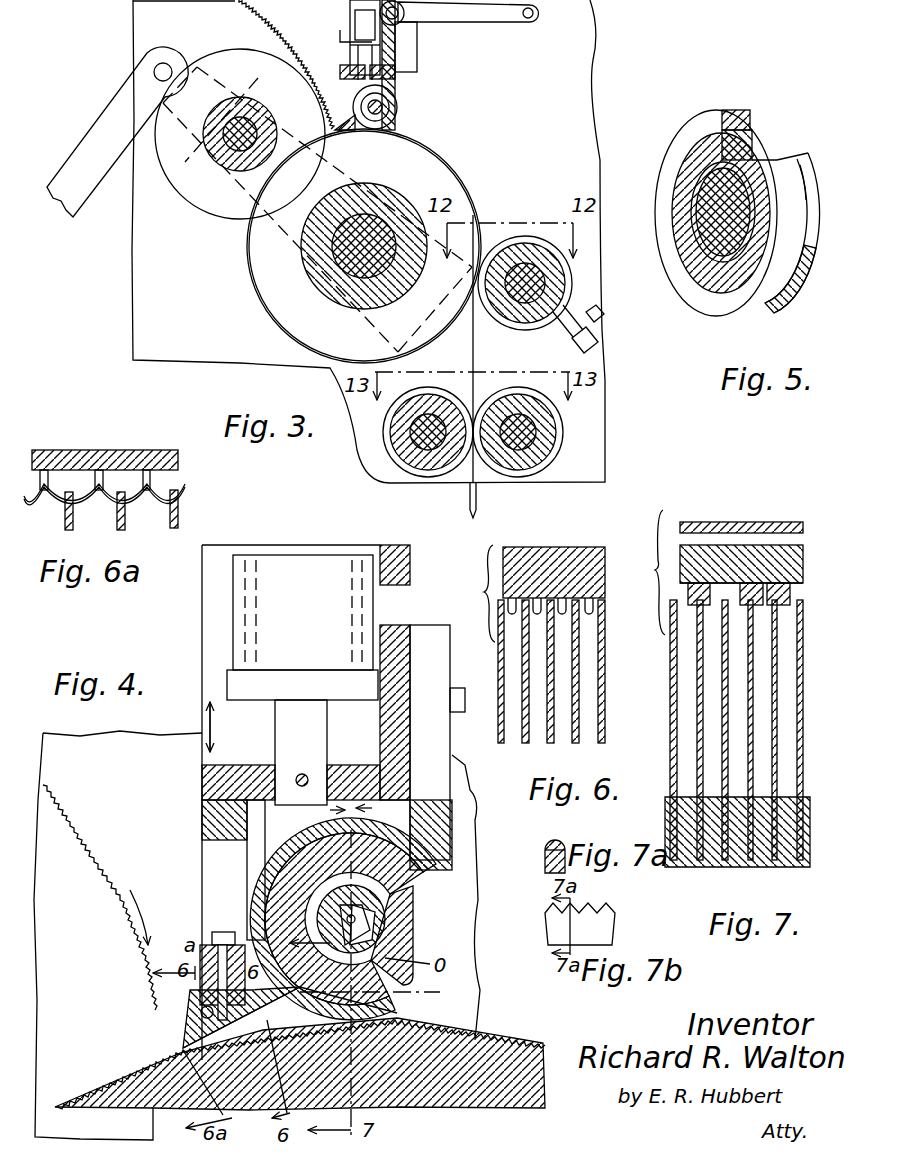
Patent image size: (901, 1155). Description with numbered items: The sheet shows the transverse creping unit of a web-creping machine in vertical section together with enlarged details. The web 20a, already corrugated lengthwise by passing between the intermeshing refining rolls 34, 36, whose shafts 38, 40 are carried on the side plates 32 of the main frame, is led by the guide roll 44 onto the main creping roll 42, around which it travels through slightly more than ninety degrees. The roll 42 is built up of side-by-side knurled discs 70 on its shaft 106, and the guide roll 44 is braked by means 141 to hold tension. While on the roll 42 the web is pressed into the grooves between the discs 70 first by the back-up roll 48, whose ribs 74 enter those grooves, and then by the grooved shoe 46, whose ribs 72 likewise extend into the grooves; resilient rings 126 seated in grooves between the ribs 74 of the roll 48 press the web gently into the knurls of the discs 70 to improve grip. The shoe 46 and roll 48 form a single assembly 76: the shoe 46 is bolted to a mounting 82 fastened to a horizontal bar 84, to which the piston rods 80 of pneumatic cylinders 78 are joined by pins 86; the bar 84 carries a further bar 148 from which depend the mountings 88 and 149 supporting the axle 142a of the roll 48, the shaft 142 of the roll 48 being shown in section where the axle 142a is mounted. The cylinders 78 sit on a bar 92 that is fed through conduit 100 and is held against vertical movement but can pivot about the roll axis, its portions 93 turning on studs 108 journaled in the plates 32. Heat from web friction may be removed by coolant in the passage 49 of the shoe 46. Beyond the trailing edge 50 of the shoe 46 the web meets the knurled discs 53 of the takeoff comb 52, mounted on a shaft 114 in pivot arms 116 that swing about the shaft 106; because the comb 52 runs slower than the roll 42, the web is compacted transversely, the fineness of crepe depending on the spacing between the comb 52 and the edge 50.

In FIG. 3, the web 20a is at (470, 372).
In FIG. 6A, the web 20a is at (184, 486).
In FIG. 3, the plates of the main frame 32 is at (583, 68).
In FIG. 4, the plates of the main frame 32 is at (279, 935).
In FIG. 3, the refining roll 34 is at (432, 478).
In FIG. 3, the refining roll 36 is at (528, 478).
In FIG. 3, the shaft 38 is at (396, 466).
In FIG. 3, the shaft 40 is at (528, 440).
In FIG. 3, the main creping roll 42 is at (275, 312).
In FIG. 4, the main creping roll 42 is at (497, 1032).
In FIG. 3, the guide roll 44 is at (520, 245).
In FIG. 3, the shoe 46 is at (338, 132).
In FIG. 6A, the shoe 46 is at (50, 460).
In FIG. 4, the shoe 46 is at (186, 1010).
In FIG. 6, the shoe 46 is at (503, 566).
In FIG. 3, the back-up roll 48 is at (400, 108).
In FIG. 5, the back-up roll 48 is at (696, 306).
In FIG. 4, the back-up roll 48 is at (442, 869).
In FIG. 7, the back-up roll 48 is at (680, 550).
In FIG. 4, the passage 49 is at (190, 1000).
In FIG. 4, the trailing edge 50 is at (185, 1050).
In FIG. 3, the takeoff roll or comb 52 is at (208, 212).
In FIG. 4, the takeoff roll or comb 52 is at (68, 812).
In FIG. 4, the knurled discs 53 is at (70, 880).
In FIG. 6A, the knurled discs 70 is at (118, 508).
In FIG. 4, the knurled discs 70 is at (525, 1088).
In FIG. 6, the knurled discs 70 is at (524, 700).
In FIG. 7, the knurled discs 70 is at (700, 698).
In FIG. 7A, the knurled discs 70 is at (562, 846).
In FIG. 7B, the knurled discs 70 is at (602, 910).
In FIG. 6A, the ribs 72 is at (118, 470).
In FIG. 6, the ribs 72 is at (537, 606).
In FIG. 5, the ribs 74 is at (790, 158).
In FIG. 7, the ribs 74 is at (688, 598).
In FIG. 3, the assembly 76 is at (400, 82).
In FIG. 4, the assembly 76 is at (413, 800).
In FIG. 3, the cylinders 78 is at (350, 8).
In FIG. 4, the cylinders 78 is at (283, 572).
In FIG. 3, the piston rods 80 is at (355, 60).
In FIG. 4, the piston rods 80 is at (275, 718).
In FIG. 4, the mounting 82 is at (238, 945).
In FIG. 3, the horizontal bar 84 is at (396, 62).
In FIG. 4, the horizontal bar 84 is at (260, 800).
In FIG. 4, the pins 86 is at (310, 780).
In FIG. 4, the mounting 88 is at (405, 824).
In FIG. 4, the bar 92 is at (398, 575).
In FIG. 4, the portions 93 is at (405, 977).
In FIG. 3, the conduit 100 is at (350, 34).
In FIG. 3, the shaft 106 is at (375, 228).
In FIG. 4, the studs 108 is at (357, 920).
In FIG. 3, the shaft 114 is at (242, 118).
In FIG. 3, the pivot arms 116 is at (178, 62).
In FIG. 5, the resilient rings 126 is at (737, 110).
In FIG. 7, the resilient rings 126 is at (795, 596).
In FIG. 3, the braking means 141 is at (590, 334).
In FIG. 4, the shaft 142 is at (364, 916).
In FIG. 5, the axle 142a is at (703, 247).
In FIG. 7, the axle 142a is at (752, 526).
In FIG. 3, the bar 148 is at (468, 27).
In FIG. 4, the bar 148 is at (412, 702).
In FIG. 3, the mounting 149 is at (434, 45).